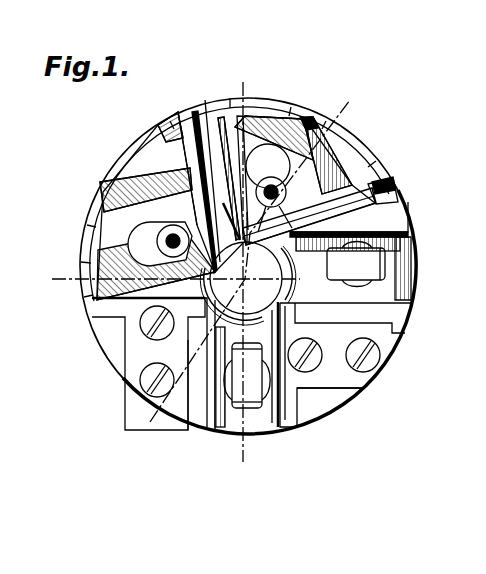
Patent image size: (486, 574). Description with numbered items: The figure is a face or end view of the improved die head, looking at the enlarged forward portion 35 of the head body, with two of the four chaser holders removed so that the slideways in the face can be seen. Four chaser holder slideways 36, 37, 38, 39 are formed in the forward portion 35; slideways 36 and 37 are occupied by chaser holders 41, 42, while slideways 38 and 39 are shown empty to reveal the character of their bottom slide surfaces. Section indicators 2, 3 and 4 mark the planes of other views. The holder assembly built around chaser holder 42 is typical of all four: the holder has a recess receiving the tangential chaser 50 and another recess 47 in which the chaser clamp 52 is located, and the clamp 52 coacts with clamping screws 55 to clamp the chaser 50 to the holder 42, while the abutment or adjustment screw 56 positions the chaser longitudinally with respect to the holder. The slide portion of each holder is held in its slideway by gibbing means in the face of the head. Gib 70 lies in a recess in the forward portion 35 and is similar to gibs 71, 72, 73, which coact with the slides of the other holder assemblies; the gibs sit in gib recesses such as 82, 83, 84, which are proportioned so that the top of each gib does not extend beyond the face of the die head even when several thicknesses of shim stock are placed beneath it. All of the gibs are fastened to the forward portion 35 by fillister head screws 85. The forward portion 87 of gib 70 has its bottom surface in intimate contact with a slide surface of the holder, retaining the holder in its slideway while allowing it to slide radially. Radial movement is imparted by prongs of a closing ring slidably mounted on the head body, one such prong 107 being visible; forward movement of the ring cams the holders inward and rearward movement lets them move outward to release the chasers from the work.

The section line 2- 2 is at (242, 272).
The section line 3- 3 is at (248, 267).
The section line 4- 4 is at (176, 280).
The forward portion 35 is at (330, 401).
The chaser holder slideway 36 is at (84, 249).
The chaser holder slideway 37 is at (271, 99).
The chaser holder slideway 38 is at (412, 272).
The chaser holder slideway 39 is at (237, 420).
The chaser holder 41 is at (105, 195).
The chaser holder 42 is at (288, 125).
The recess 47 is at (245, 164).
The tangential chaser 50 is at (330, 212).
The chaser clamp 52 is at (259, 233).
The clamping screws 55 is at (276, 188).
The abutment or adjustment screw 56 is at (398, 190).
The gib 70 is at (94, 202).
The gib 71 is at (309, 114).
The gib 72 is at (315, 350).
The gib 73 is at (149, 364).
The gib recess 82 is at (404, 216).
The gib recess 83 is at (405, 326).
The gib recess 84 is at (190, 412).
The fillister head screws 85 is at (318, 357).
The forward portion of gib 87 is at (200, 162).
The prong 107 is at (386, 258).